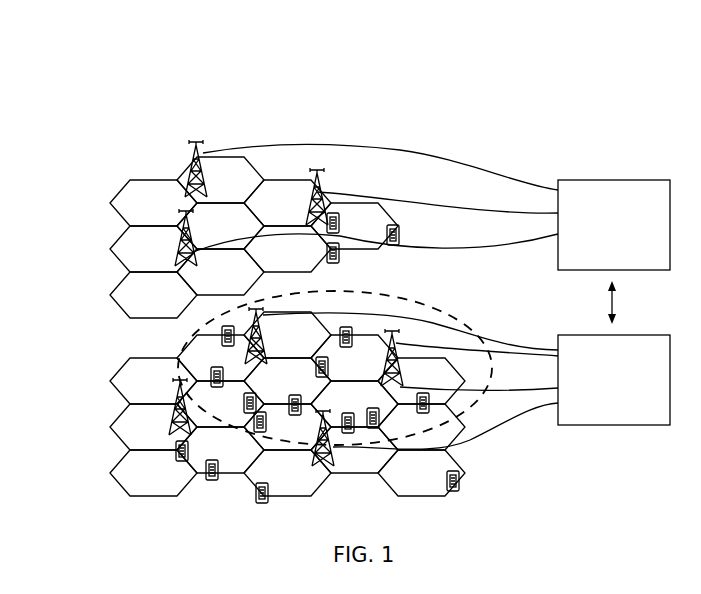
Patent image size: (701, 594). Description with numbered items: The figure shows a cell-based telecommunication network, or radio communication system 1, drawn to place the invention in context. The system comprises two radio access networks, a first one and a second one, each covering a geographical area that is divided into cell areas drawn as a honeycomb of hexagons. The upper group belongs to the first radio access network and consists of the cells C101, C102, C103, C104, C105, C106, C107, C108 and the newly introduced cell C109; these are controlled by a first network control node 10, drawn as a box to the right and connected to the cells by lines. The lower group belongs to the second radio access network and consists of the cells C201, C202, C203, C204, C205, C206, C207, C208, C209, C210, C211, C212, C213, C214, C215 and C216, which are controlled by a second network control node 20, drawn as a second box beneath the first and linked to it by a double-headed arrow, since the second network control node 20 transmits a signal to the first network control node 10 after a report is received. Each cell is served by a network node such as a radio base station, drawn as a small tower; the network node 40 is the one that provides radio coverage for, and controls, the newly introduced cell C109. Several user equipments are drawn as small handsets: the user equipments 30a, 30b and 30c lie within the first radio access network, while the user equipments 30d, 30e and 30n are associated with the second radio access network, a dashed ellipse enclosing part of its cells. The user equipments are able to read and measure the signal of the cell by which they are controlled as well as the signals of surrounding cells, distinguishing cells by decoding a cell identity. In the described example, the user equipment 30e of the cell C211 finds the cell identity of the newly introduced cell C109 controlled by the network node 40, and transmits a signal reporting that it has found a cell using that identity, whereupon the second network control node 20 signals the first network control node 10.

The radio communication system 1 is at (337, 108).
The first network control node 10 is at (614, 225).
The second network control node 20 is at (614, 380).
The network node 40 is at (321, 190).
The user equipment 30a is at (341, 230).
The user equipment 30b is at (400, 233).
The user equipment 30c is at (334, 263).
The user equipment 30d is at (226, 324).
The user equipment 30e is at (352, 330).
The user equipment 30n is at (459, 488).
The cell C101 is at (153, 203).
The cell C102 is at (153, 249).
The cell C103 is at (153, 295).
The cell C104 is at (220, 180).
The cell C105 is at (220, 226).
The cell C106 is at (220, 272).
The cell C107 is at (287, 203).
The cell C108 is at (287, 249).
The newly introduced cell C109 is at (354, 226).
The cell C201 is at (153, 381).
The cell C202 is at (153, 427).
The cell C203 is at (153, 473).
The cell C204 is at (220, 358).
The cell C205 is at (220, 404).
The cell C206 is at (220, 450).
The cell C207 is at (287, 335).
The cell C208 is at (287, 381).
The cell C209 is at (287, 427).
The cell C210 is at (287, 473).
The cell C211 is at (354, 358).
The cell C212 is at (354, 404).
The cell C213 is at (354, 450).
The cell C214 is at (421, 381).
The cell C215 is at (421, 427).
The cell C216 is at (421, 473).